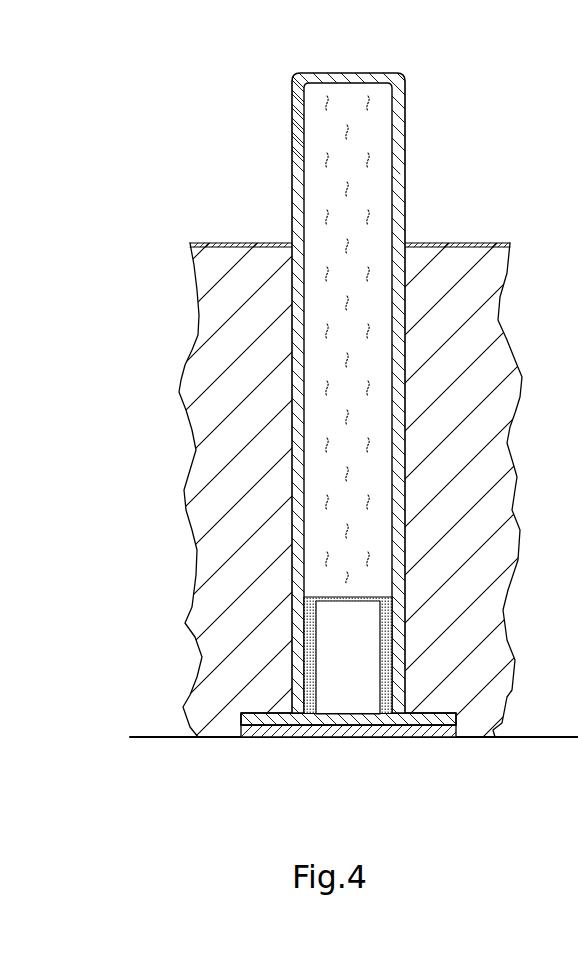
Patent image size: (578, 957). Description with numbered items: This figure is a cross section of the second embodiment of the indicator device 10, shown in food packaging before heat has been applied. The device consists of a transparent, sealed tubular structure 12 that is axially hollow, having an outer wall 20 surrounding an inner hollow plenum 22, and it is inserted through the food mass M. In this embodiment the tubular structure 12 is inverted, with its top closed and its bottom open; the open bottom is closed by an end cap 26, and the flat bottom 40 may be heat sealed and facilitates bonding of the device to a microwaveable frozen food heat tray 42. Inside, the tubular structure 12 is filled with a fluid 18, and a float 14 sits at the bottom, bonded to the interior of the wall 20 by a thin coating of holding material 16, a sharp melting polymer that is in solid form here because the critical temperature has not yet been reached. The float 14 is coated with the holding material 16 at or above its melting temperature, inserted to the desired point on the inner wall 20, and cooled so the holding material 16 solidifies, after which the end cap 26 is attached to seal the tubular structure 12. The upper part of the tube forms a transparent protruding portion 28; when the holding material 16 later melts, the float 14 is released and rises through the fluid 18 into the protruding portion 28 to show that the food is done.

The indicator device 10 is at (246, 92).
The tubular structure 12 is at (291, 203).
The float 14 is at (340, 740).
The holding material 16 is at (340, 706).
The fluid 18 is at (330, 368).
The outer wall 20 is at (406, 210).
The inner hollow plenum 22 is at (382, 300).
The end cap 26 is at (256, 738).
The protruding portion 28 is at (380, 153).
The flat bottom 40 is at (432, 739).
The microwaveable frozen food heat tray 42 is at (172, 741).
The mass M is at (186, 624).